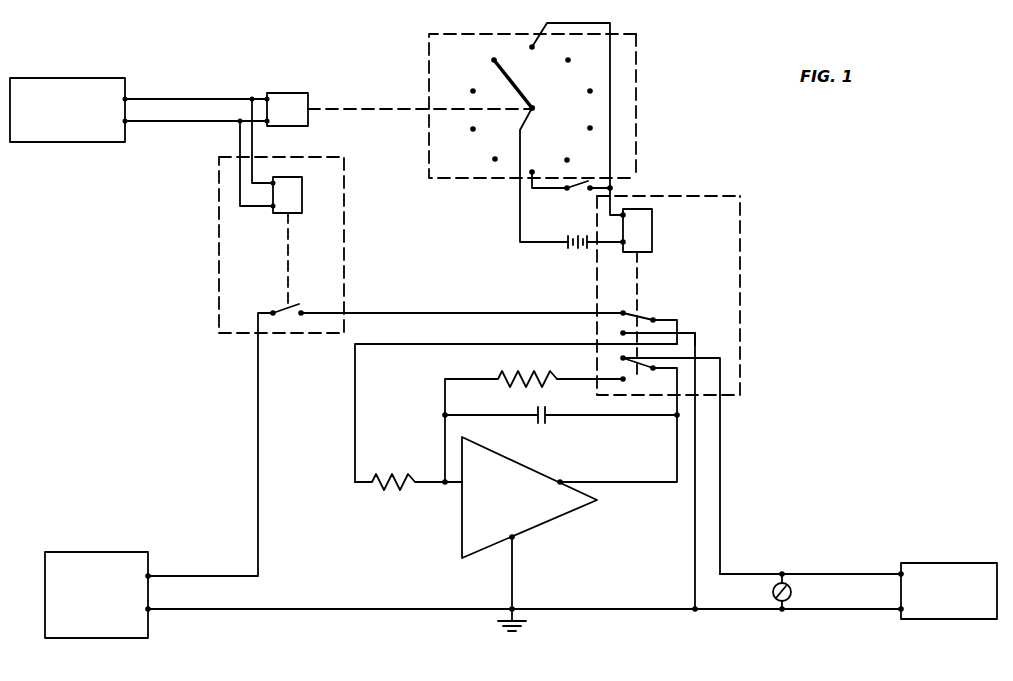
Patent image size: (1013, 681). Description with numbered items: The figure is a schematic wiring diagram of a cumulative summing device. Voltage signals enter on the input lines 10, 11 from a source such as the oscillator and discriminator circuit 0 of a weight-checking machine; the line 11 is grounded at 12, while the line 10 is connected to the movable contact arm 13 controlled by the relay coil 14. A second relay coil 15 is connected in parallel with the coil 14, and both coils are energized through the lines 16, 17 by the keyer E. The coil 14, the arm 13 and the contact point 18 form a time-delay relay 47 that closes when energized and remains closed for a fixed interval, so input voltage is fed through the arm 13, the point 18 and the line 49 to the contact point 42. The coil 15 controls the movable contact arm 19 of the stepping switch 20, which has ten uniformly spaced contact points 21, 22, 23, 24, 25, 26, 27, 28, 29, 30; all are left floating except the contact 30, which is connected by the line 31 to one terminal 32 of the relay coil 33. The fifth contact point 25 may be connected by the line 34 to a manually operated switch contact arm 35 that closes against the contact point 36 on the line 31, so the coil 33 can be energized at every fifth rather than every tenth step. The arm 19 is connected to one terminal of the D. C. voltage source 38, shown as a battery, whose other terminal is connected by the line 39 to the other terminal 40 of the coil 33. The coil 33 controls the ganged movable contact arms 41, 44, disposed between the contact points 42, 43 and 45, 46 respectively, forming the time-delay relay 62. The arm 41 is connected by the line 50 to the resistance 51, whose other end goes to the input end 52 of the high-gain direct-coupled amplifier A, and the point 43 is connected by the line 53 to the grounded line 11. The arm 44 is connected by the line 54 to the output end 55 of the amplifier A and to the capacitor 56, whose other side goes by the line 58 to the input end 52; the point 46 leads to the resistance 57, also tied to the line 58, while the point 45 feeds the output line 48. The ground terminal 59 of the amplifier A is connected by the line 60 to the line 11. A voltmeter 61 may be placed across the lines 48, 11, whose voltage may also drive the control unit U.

The keyer E is at (83, 78).
The oscillator and discriminator circuit 0 is at (100, 552).
The input line 10 is at (213, 576).
The input line 11 is at (205, 610).
The ground 12 is at (518, 620).
The movable contact arm 13 is at (275, 311).
The relay coil 14 is at (302, 190).
The relay coil 15 is at (296, 93).
The line 16 is at (175, 99).
The line 17 is at (166, 121).
The contact point 18 is at (304, 310).
The movable contact arm 19 is at (528, 97).
The stepping switch 20 is at (488, 34).
The contact point 21 is at (492, 59).
The contact point 22 is at (471, 90).
The contact point 23 is at (471, 128).
The contact point 24 is at (493, 159).
The fifth contact point 25 is at (531, 170).
The contact point 26 is at (566, 158).
The contact point 27 is at (591, 126).
The contact point 28 is at (588, 90).
The contact point 29 is at (569, 58).
The contact point 30 is at (531, 44).
The line 31 is at (636, 101).
The terminal 32 is at (620, 197).
The relay coil 33 is at (653, 214).
The line 34 is at (547, 189).
The switch contact arm 35 is at (579, 183).
The contact point 36 is at (591, 192).
The D. C. voltage source 38 is at (567, 247).
The line 39 is at (595, 244).
The terminal 40 is at (620, 245).
The movable contact arm 41 is at (651, 317).
The contact point 42 is at (624, 310).
The contact point 43 is at (619, 333).
The movable contact arm 44 is at (652, 370).
The contact point 45 is at (620, 358).
The contact point 46 is at (622, 382).
The time-delay relay 47 is at (216, 182).
The output line 48 is at (824, 574).
The line 49 is at (450, 313).
The line 50 is at (356, 410).
The resistance 51 is at (392, 486).
The input end 52 is at (452, 484).
The line 53 is at (695, 526).
The line 54 is at (646, 482).
The output end 55 is at (560, 478).
The capacitor 56 is at (547, 418).
The resistance 57 is at (529, 377).
The line 58 is at (441, 451).
The ground terminal 59 is at (515, 538).
The line 60 is at (514, 592).
The voltmeter 61 is at (792, 590).
The time-delay relay 62 is at (744, 233).
The direct-coupled amplifier A is at (462, 545).
The control unit U is at (947, 563).